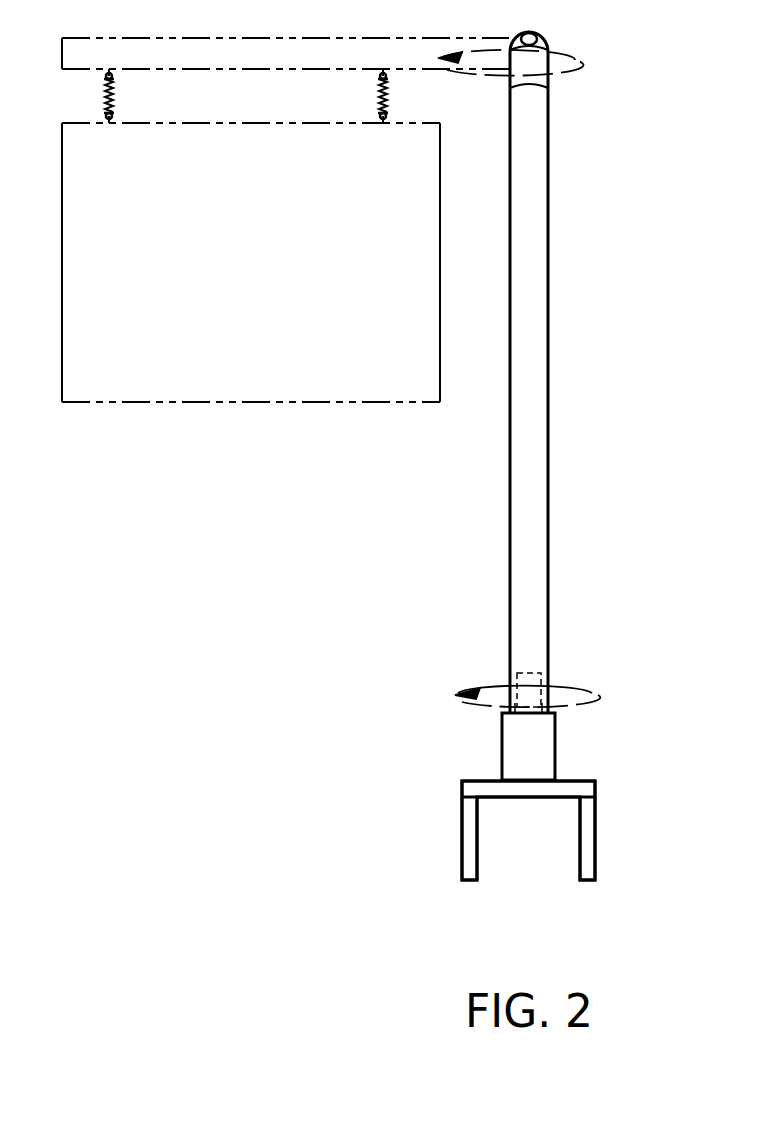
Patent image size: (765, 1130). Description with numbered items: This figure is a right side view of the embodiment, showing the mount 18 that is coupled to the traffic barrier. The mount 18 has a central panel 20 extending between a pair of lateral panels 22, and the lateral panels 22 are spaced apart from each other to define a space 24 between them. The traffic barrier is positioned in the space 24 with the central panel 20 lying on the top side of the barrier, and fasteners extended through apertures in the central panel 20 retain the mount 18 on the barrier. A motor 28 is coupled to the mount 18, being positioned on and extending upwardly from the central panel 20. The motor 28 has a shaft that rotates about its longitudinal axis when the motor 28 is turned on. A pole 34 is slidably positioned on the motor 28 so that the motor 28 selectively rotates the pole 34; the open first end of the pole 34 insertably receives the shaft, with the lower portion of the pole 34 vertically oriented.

The mount 18 is at (462, 784).
The central panel 20 is at (580, 781).
The lateral panels 22 is at (462, 828).
The space 24 is at (527, 838).
The motor 28 is at (502, 725).
The pole 34 is at (548, 418).